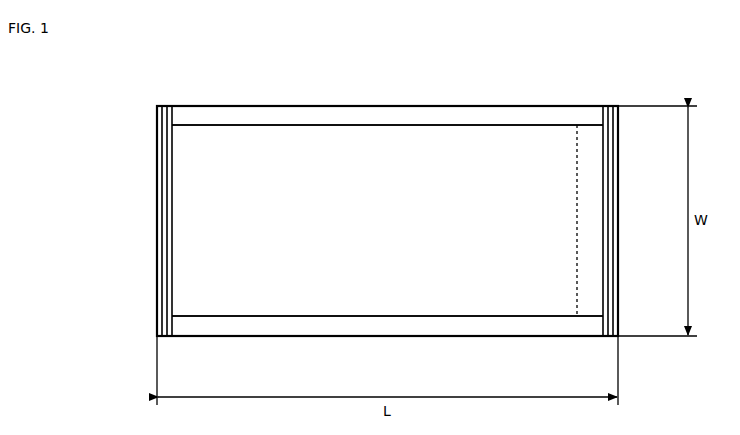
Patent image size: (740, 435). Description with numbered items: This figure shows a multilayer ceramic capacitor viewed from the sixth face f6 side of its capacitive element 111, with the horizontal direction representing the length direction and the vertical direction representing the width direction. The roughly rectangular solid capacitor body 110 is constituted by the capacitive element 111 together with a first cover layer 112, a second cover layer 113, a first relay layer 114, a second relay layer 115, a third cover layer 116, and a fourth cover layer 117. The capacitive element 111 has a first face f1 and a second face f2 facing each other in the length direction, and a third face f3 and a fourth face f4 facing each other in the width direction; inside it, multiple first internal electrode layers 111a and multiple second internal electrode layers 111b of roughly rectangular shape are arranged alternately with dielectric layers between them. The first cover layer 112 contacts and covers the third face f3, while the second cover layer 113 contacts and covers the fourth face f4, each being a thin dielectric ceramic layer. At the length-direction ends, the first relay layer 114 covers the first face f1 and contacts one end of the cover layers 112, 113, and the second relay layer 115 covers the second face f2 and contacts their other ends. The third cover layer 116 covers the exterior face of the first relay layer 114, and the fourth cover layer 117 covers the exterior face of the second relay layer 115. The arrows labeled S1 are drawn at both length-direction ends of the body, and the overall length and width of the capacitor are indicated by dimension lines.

The capacitor body 110 is at (160, 107).
The capacitive element 111 is at (383, 128).
The first cover layer 112 is at (465, 333).
The second cover layer 113 is at (462, 115).
The first relay layer 114 is at (168, 155).
The second relay layer 115 is at (613, 155).
The third cover layer 116 is at (162, 185).
The fourth cover layer 117 is at (613, 187).
The first internal electrode layer 111a is at (510, 140).
The second internal electrode layer 111b is at (588, 137).
The first face f1 is at (175, 128).
The second face f2 is at (602, 135).
The third face f3 is at (345, 315).
The fourth face f4 is at (345, 127).
The sixth face f6 is at (420, 167).
The section line S1 is at (152, 220).